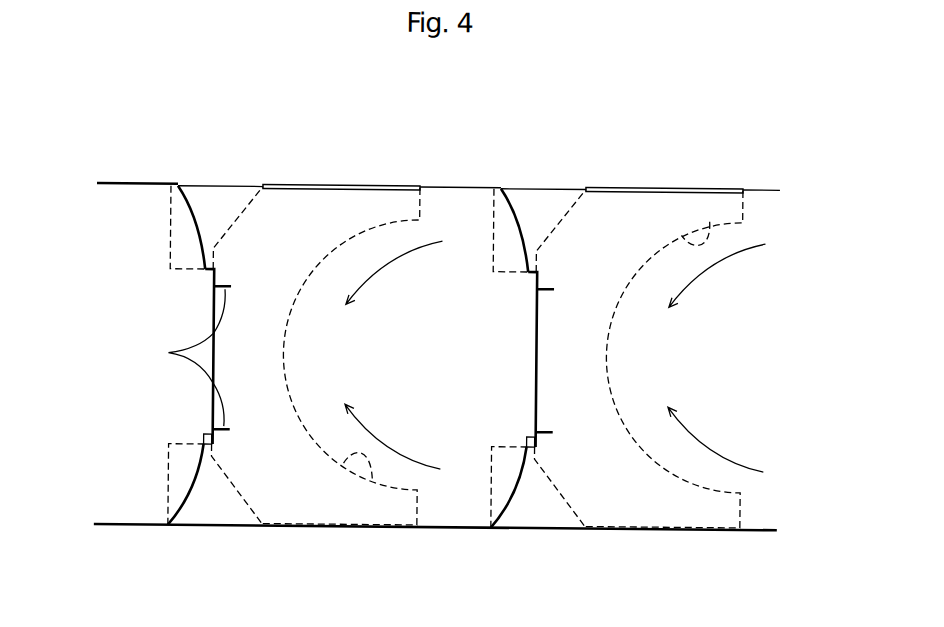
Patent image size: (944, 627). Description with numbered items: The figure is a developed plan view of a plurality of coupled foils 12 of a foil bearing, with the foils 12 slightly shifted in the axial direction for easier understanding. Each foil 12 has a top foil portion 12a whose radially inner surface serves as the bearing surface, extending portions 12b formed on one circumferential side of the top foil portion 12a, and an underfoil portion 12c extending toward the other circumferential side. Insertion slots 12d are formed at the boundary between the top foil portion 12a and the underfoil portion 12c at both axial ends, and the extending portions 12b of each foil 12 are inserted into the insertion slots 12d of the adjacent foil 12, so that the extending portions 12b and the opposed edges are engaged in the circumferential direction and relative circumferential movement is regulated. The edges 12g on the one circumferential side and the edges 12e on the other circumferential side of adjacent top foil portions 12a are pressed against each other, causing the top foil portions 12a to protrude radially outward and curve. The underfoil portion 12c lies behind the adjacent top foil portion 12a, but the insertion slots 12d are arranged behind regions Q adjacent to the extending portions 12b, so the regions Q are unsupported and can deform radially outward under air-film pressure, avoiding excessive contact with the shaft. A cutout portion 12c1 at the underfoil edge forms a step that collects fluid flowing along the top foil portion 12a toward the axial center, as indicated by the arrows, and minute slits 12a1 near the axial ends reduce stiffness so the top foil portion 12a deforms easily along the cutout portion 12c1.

The foil 12 is at (464, 175).
The top foil portion 12a is at (438, 204).
The slit 12a1 is at (167, 357).
The extending portion 12b is at (180, 222).
The underfoil portion 12c is at (613, 222).
The cutout portion 12c1 is at (710, 216).
The insertion slot 12d is at (212, 208).
The edge 12e is at (520, 206).
The edge 12g is at (215, 304).
The region Q is at (235, 200).